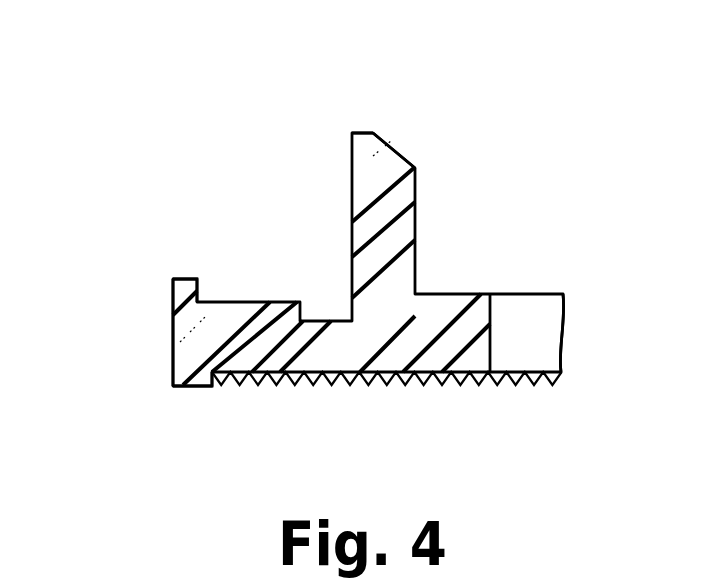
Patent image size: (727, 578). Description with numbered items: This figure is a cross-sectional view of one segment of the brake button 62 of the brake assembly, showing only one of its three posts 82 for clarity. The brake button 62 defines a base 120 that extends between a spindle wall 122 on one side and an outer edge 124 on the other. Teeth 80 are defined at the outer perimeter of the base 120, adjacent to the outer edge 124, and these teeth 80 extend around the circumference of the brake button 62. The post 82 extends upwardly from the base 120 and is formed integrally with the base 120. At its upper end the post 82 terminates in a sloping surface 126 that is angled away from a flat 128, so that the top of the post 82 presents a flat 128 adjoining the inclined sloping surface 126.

The brake button 62 is at (138, 263).
The teeth 80 is at (196, 389).
The post 82 is at (373, 218).
The base 120 is at (331, 378).
The spindle wall 122 is at (489, 343).
The outer edge 124 is at (172, 333).
The sloping surface 126 is at (396, 151).
The flat 128 is at (361, 132).